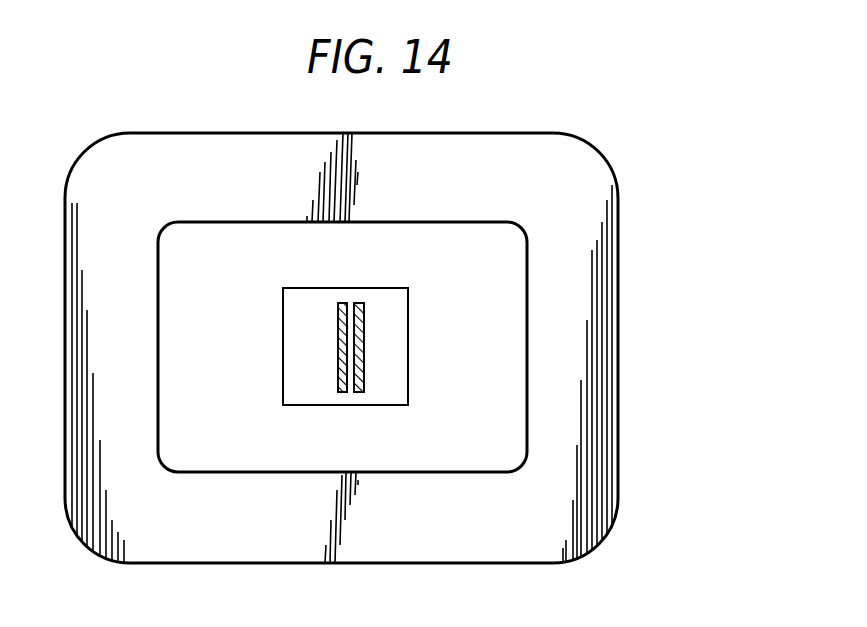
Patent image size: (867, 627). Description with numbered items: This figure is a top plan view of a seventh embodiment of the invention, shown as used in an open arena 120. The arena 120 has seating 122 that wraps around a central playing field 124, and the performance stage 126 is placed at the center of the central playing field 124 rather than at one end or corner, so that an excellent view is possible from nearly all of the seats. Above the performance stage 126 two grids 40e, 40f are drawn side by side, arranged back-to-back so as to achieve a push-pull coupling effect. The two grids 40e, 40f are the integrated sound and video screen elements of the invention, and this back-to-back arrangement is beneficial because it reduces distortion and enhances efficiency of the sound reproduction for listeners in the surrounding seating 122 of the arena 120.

The arena 120 is at (607, 149).
The seating 122 is at (580, 241).
The central playing field 124 is at (490, 277).
The performance stage 126 is at (327, 348).
The grid 40e is at (341, 393).
The grid 40f is at (358, 393).